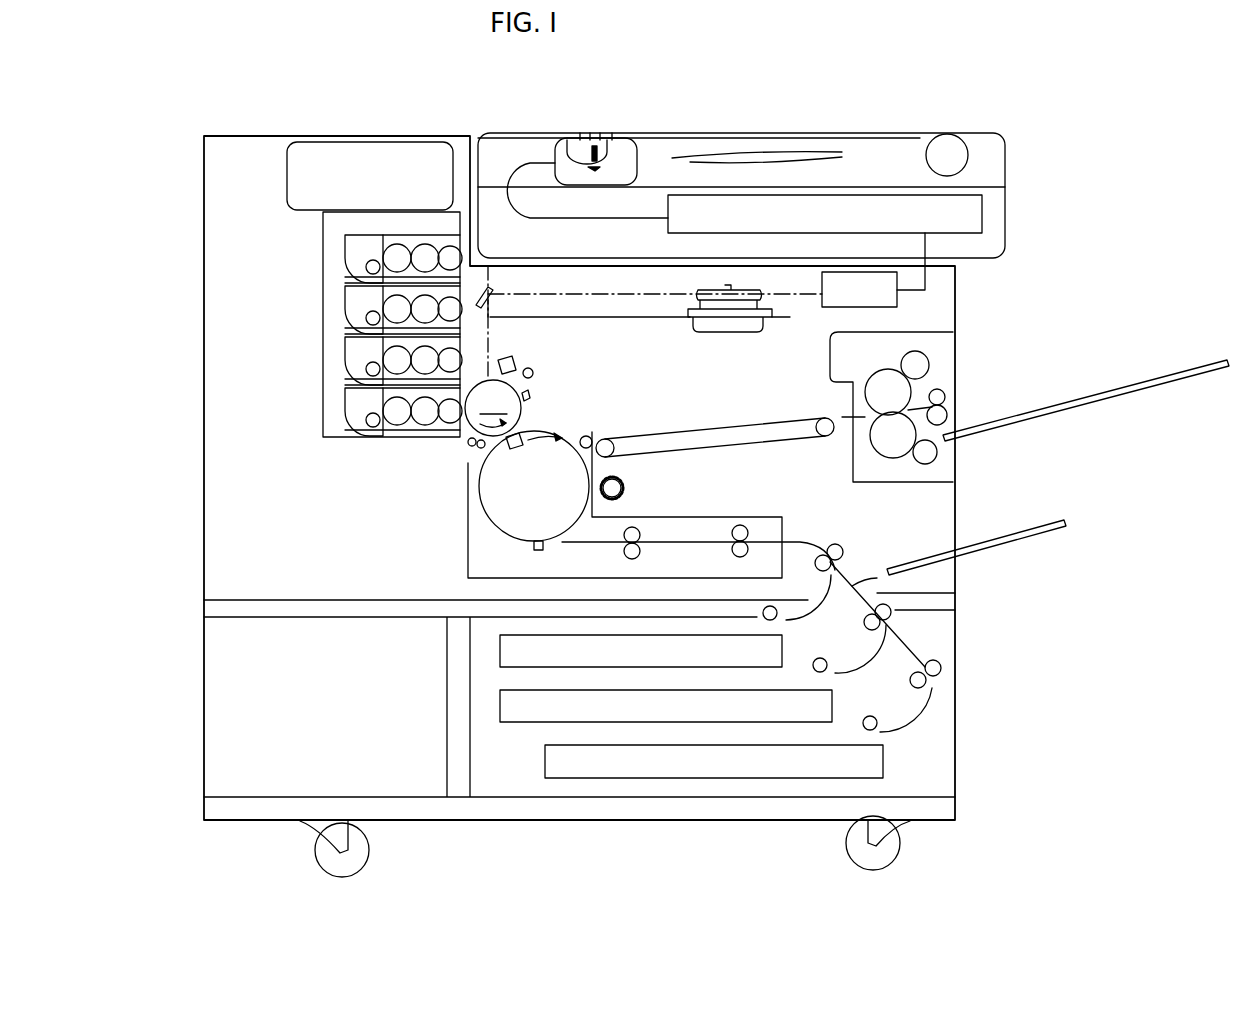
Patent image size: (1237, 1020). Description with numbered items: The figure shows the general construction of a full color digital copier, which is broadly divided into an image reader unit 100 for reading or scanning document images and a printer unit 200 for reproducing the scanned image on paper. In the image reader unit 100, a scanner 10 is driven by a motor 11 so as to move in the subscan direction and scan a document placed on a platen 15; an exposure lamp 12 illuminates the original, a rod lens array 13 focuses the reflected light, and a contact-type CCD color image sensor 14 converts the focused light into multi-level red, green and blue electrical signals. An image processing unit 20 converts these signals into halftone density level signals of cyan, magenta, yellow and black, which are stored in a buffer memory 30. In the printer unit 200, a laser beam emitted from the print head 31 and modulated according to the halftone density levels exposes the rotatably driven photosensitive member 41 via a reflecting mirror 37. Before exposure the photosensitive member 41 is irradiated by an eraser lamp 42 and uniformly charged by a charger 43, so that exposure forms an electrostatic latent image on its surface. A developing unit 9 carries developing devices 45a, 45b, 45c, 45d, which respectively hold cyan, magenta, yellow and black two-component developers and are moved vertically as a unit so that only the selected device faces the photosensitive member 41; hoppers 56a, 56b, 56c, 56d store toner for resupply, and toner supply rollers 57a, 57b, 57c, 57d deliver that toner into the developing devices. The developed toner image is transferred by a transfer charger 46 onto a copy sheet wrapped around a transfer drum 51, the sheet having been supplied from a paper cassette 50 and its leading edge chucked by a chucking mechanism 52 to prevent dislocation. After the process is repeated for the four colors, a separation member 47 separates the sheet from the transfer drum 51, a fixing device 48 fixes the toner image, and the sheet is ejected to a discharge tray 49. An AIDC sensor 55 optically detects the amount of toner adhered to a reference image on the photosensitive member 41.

The image reader unit 100 is at (1006, 154).
The printer unit 200 is at (204, 468).
The developing unit 9 is at (365, 440).
The scanner 10 is at (638, 163).
The motor 11 is at (962, 135).
The exposure lamp 12 is at (577, 148).
The rod lens array 13 is at (598, 148).
The contact-type CCD color image sensor 14 is at (595, 172).
The platen 15 is at (810, 132).
The image processing unit 20 is at (985, 215).
The buffer memory 30 is at (890, 300).
The print head 31 is at (793, 310).
The reflecting mirror 37 is at (492, 294).
The photosensitive member 41 is at (497, 351).
The eraser lamp 42 is at (534, 373).
The charger 43 is at (515, 358).
The developing device 45a is at (413, 235).
The developing device 45b is at (390, 290).
The developing device 45c is at (388, 341).
The developing device 45d is at (410, 430).
The transfer charger 46 is at (514, 449).
The separation member 47 is at (590, 420).
The fixing device 48 is at (945, 372).
The discharge tray 49 is at (1108, 392).
The paper cassette 50 is at (545, 760).
The transfer drum 51 is at (495, 528).
The chucking mechanism 52 is at (540, 550).
The AIDC sensor 55 is at (470, 444).
The hopper 56a is at (352, 244).
The hopper 56b is at (352, 298).
The hopper 56c is at (352, 348).
The hopper 56d is at (352, 400).
The toner supply roller 57a is at (366, 265).
The toner supply roller 57b is at (366, 318).
The toner supply roller 57c is at (366, 370).
The toner supply roller 57d is at (366, 422).